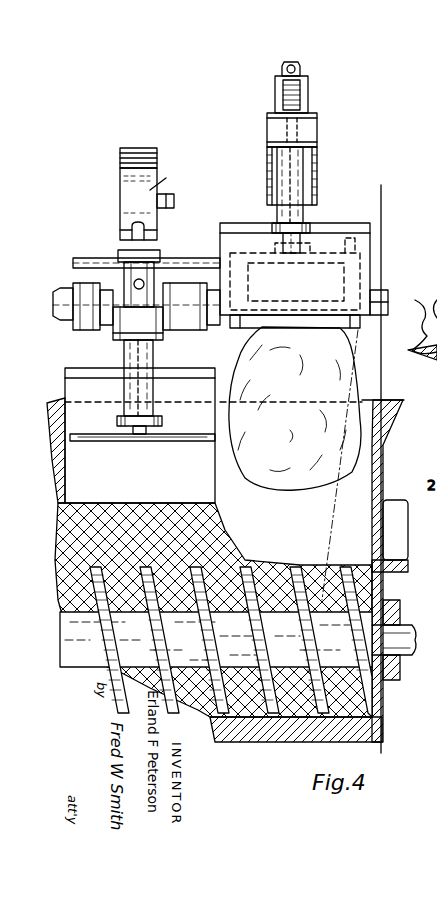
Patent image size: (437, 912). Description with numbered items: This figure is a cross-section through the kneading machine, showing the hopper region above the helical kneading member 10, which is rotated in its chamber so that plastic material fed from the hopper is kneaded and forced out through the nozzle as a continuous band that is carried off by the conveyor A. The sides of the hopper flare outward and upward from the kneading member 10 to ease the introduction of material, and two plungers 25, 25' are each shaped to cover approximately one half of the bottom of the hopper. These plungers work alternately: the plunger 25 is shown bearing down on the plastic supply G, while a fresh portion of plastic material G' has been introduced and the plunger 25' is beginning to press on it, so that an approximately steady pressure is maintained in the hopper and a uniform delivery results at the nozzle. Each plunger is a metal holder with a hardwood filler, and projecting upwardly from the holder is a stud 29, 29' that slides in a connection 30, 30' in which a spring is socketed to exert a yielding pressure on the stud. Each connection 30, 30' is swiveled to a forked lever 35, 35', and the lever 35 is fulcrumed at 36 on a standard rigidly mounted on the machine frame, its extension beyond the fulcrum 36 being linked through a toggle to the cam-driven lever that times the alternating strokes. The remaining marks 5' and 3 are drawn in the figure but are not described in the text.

The forked lever 35 is at (308, 133).
The connection 30 is at (307, 190).
The stud 29 is at (313, 243).
The plunger 25 is at (314, 275).
The fulcrum 36 is at (384, 298).
The forked lever 35' is at (154, 244).
The connection 30' is at (150, 383).
The stud 29' is at (165, 423).
The plunger 25' is at (140, 435).
The plastic supply G is at (295, 408).
The portion of plastic material G' is at (213, 610).
The helical kneading member 10 is at (334, 592).
The conveyor shaft 5' is at (402, 630).
The section line 3- 3 is at (381, 185).
The conveyor A is at (436, 379).